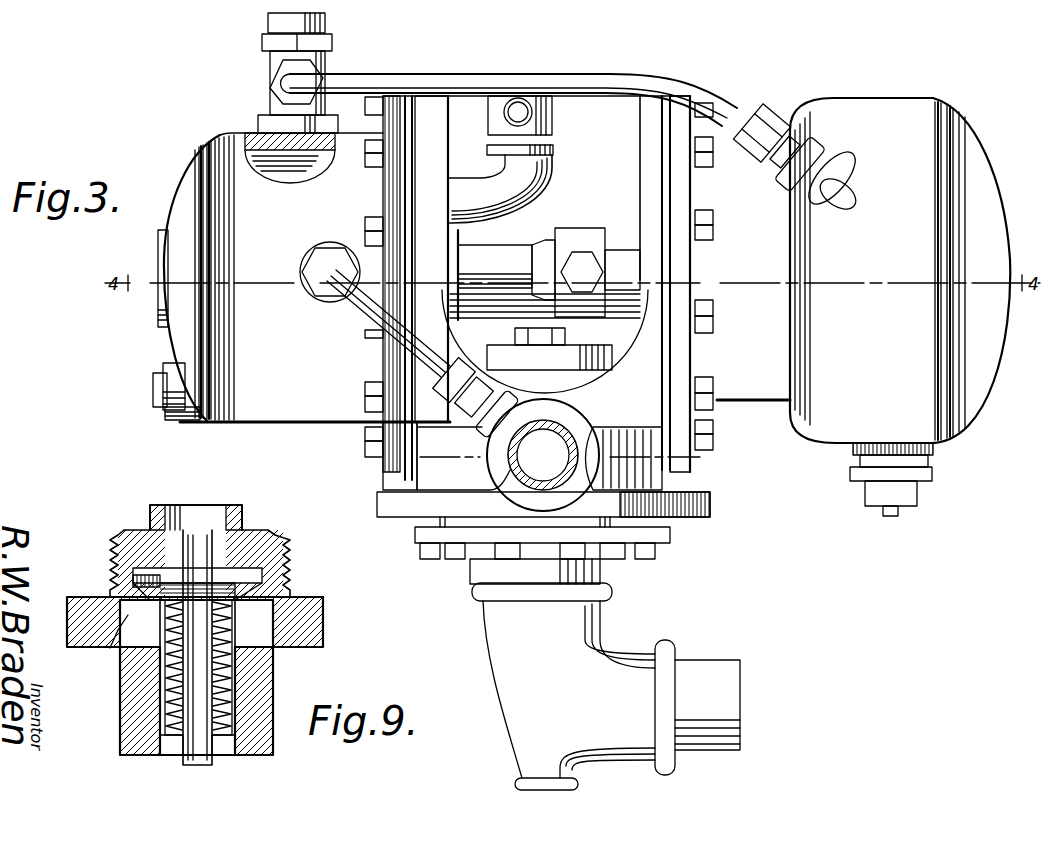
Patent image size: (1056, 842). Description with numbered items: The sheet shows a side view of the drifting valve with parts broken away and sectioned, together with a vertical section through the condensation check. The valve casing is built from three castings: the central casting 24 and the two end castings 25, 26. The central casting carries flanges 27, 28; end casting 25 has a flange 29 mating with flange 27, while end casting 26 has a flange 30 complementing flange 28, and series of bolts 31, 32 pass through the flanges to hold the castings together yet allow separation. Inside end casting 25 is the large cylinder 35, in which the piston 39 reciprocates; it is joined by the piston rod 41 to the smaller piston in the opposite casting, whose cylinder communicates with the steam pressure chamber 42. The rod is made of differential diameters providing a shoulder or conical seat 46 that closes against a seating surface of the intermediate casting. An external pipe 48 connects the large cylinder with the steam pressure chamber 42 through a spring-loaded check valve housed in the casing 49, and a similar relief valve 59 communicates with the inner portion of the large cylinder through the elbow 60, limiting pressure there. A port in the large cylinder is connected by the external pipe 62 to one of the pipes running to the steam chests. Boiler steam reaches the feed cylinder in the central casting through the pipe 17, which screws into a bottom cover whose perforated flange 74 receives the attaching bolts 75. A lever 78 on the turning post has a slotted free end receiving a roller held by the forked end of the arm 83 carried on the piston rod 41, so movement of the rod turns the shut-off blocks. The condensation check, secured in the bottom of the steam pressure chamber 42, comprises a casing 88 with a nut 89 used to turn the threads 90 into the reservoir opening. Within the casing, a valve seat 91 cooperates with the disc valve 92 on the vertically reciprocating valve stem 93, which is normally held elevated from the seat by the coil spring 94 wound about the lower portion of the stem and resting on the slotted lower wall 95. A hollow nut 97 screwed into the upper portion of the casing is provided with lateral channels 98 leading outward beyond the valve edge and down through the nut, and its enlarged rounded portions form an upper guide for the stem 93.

In FIG. 3, the pipe 17 is at (695, 672).
In FIG. 3, the central casting 24 is at (405, 482).
In FIG. 3, the end casting 25 is at (176, 334).
In FIG. 3, the end casting 26 is at (933, 99).
In FIG. 3, the flange 27 is at (430, 105).
In FIG. 3, the flange 28 is at (680, 125).
In FIG. 3, the flange 29 is at (392, 200).
In FIG. 3, the flange 30 is at (740, 112).
In FIG. 3, the bolts 31 is at (375, 100).
In FIG. 3, the bolts 32 is at (712, 298).
In FIG. 3, the large cylinder 35 is at (255, 160).
In FIG. 3, the piston 39 is at (316, 172).
In FIG. 3, the piston rod 41 is at (462, 252).
In FIG. 3, the steam pressure chamber 42 is at (848, 162).
In FIG. 3, the shoulder or conical seat 46 is at (540, 250).
In FIG. 3, the external pipe 48 is at (608, 74).
In FIG. 3, the casing 49 is at (270, 66).
In FIG. 3, the relief valve 59 is at (532, 112).
In FIG. 3, the elbow 60 is at (540, 205).
In FIG. 3, the pipe 62 is at (372, 318).
In FIG. 3, the perforated flange 74 is at (682, 532).
In FIG. 3, the bolts 75 is at (660, 552).
In FIG. 3, the lever 78 is at (497, 345).
In FIG. 3, the arm 83 is at (550, 340).
In FIG. 3, the casing 88 is at (905, 478).
In FIG. 9, the casing 88 is at (262, 668).
In FIG. 9, the nut 89 is at (325, 612).
In FIG. 9, the threads 90 is at (270, 582).
In FIG. 9, the valve seat 91 is at (118, 647).
In FIG. 9, the disc valve 92 is at (150, 577).
In FIG. 9, the valve stem 93 is at (178, 740).
In FIG. 9, the coil spring 94 is at (170, 700).
In FIG. 9, the lower wall 95 is at (226, 740).
In FIG. 9, the nut 97 is at (240, 530).
In FIG. 9, the lateral channels 98 is at (250, 572).